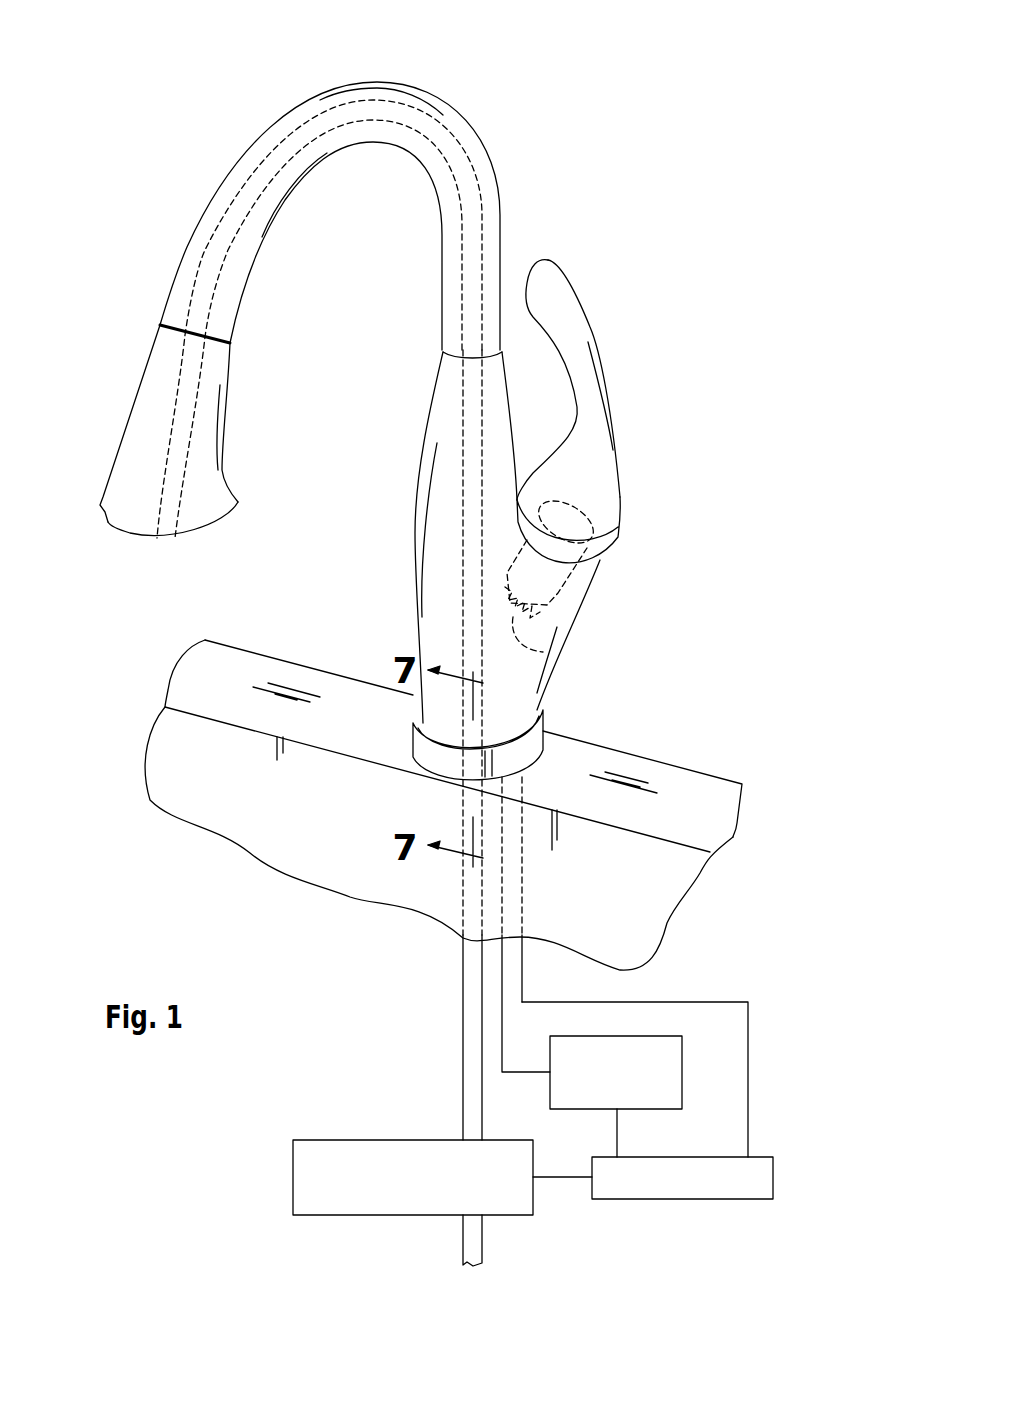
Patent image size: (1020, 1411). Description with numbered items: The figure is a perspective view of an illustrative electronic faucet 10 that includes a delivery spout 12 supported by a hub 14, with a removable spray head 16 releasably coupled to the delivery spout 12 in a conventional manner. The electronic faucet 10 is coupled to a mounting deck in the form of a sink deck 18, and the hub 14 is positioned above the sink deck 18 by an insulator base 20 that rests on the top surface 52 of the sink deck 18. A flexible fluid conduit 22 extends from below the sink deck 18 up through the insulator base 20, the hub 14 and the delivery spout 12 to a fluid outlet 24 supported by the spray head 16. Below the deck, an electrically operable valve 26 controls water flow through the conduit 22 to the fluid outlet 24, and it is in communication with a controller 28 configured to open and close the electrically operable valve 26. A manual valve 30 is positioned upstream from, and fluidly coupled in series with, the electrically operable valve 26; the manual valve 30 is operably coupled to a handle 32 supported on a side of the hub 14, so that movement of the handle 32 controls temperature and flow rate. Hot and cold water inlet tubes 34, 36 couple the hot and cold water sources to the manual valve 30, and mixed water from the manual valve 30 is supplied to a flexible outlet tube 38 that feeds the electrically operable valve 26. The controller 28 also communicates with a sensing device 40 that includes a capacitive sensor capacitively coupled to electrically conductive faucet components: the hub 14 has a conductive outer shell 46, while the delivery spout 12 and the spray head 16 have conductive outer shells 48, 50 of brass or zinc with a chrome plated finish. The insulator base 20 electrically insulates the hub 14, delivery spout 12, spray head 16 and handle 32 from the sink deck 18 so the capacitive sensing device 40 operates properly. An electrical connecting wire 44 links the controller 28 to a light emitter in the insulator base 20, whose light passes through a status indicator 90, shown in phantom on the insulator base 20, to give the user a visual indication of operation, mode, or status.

The electronic faucet 10 is at (724, 79).
The delivery spout 12 is at (330, 184).
The hub 14 is at (465, 537).
The spray head 16 is at (137, 423).
The sink deck 18 is at (439, 764).
The insulator base 20 is at (532, 733).
The flexible fluid conduit 22 is at (290, 620).
The fluid outlet 24 is at (173, 568).
The electrically operable valve 26 is at (390, 1177).
The controller 28 is at (689, 1208).
The manual valve 30 is at (597, 488).
The handle 32 is at (602, 411).
The hot water inlet tube 34 is at (471, 572).
The cold water inlet tube 36 is at (573, 829).
The flexible outlet tube 38 is at (487, 941).
The sensing device 40 is at (645, 1055).
The electrical connecting wire 44 is at (664, 1071).
The outer shell of hub 46 is at (378, 539).
The outer shell of delivery spout 48 is at (336, 246).
The outer shell of spray head 50 is at (275, 426).
The top surface of sink deck 52 is at (654, 774).
The status indicator 90 is at (388, 802).